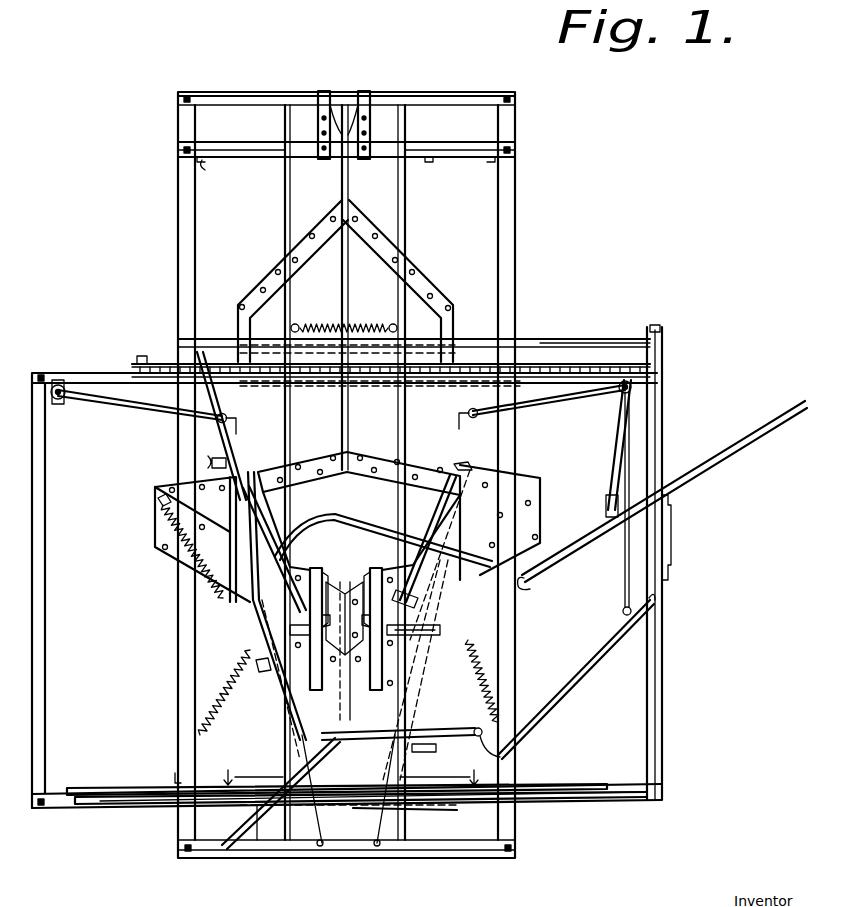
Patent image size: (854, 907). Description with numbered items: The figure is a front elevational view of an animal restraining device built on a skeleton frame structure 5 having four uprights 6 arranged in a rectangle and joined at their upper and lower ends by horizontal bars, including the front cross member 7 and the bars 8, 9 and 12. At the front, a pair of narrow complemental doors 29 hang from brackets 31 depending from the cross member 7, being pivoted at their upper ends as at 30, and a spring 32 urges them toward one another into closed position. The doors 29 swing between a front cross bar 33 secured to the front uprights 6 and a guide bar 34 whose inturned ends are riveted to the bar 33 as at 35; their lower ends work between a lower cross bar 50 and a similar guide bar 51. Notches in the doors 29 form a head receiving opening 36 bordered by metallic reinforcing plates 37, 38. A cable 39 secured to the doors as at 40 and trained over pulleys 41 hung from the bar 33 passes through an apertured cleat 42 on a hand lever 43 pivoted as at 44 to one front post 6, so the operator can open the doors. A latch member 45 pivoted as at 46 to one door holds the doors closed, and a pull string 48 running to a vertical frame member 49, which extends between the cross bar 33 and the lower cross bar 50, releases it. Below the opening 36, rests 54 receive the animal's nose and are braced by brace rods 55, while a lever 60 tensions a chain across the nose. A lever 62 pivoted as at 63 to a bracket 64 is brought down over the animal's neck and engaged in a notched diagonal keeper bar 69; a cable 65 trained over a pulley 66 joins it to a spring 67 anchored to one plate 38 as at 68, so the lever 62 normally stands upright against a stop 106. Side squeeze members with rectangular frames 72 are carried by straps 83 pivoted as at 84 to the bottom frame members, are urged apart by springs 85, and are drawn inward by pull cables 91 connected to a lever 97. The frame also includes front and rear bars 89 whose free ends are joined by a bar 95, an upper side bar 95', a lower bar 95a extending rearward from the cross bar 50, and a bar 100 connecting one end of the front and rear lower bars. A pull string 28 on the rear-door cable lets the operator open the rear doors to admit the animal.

The skeleton frame structure 5 is at (349, 773).
The uprights 6 is at (178, 250).
The front cross member 7 is at (438, 94).
The horizontal bar 8 is at (433, 162).
The horizontal bar 9 is at (200, 166).
The horizontal bar 12 is at (413, 850).
The pull string 28 is at (623, 605).
The doors 29 is at (268, 305).
The pivot 30 is at (320, 120).
The brackets 31 is at (326, 95).
The spring 32 is at (320, 324).
The front cross bar 33 is at (587, 365).
The guide bar 34 is at (538, 358).
The rivet connection 35 is at (132, 362).
The head receiving opening 36 is at (386, 486).
The metallic reinforcing plate 37 is at (308, 463).
The metallic reinforcing plate 38 is at (370, 457).
The cable 39 is at (130, 412).
The cable attachment 40 is at (228, 418).
The pulleys 41 is at (58, 400).
The apertured cleat 42 is at (608, 495).
The hand lever 43 is at (690, 468).
The pivot 44 is at (524, 584).
The latch member 45 is at (425, 732).
The pivot 46 is at (412, 748).
The pull string 48 is at (578, 680).
The vertical frame member 49 is at (663, 655).
The lower cross bar 50 is at (600, 808).
The guide bar 51 is at (552, 784).
The rests 54 is at (332, 580).
The brace rods 55 is at (255, 643).
The lever 60 is at (244, 852).
The lever 62 is at (408, 501).
The pivot 63 is at (285, 555).
The bracket 64 is at (296, 574).
The cable 65 is at (256, 606).
The pulley 66 is at (262, 680).
The spring 67 is at (220, 610).
The spring anchor 68 is at (160, 508).
The keeper bar 69 is at (430, 540).
The rectangular frame 72 is at (212, 428).
The straps 83 is at (313, 821).
The pivot 84 is at (316, 848).
The springs 85 is at (220, 715).
The front and rear bars 89 is at (593, 340).
The pull cable 91 is at (662, 428).
The bar 95 is at (675, 319).
The upper side bar 95' is at (146, 344).
The lower bar 95a is at (176, 778).
The lever 97 is at (668, 545).
The bar 100 is at (634, 773).
The stop 106 is at (208, 463).